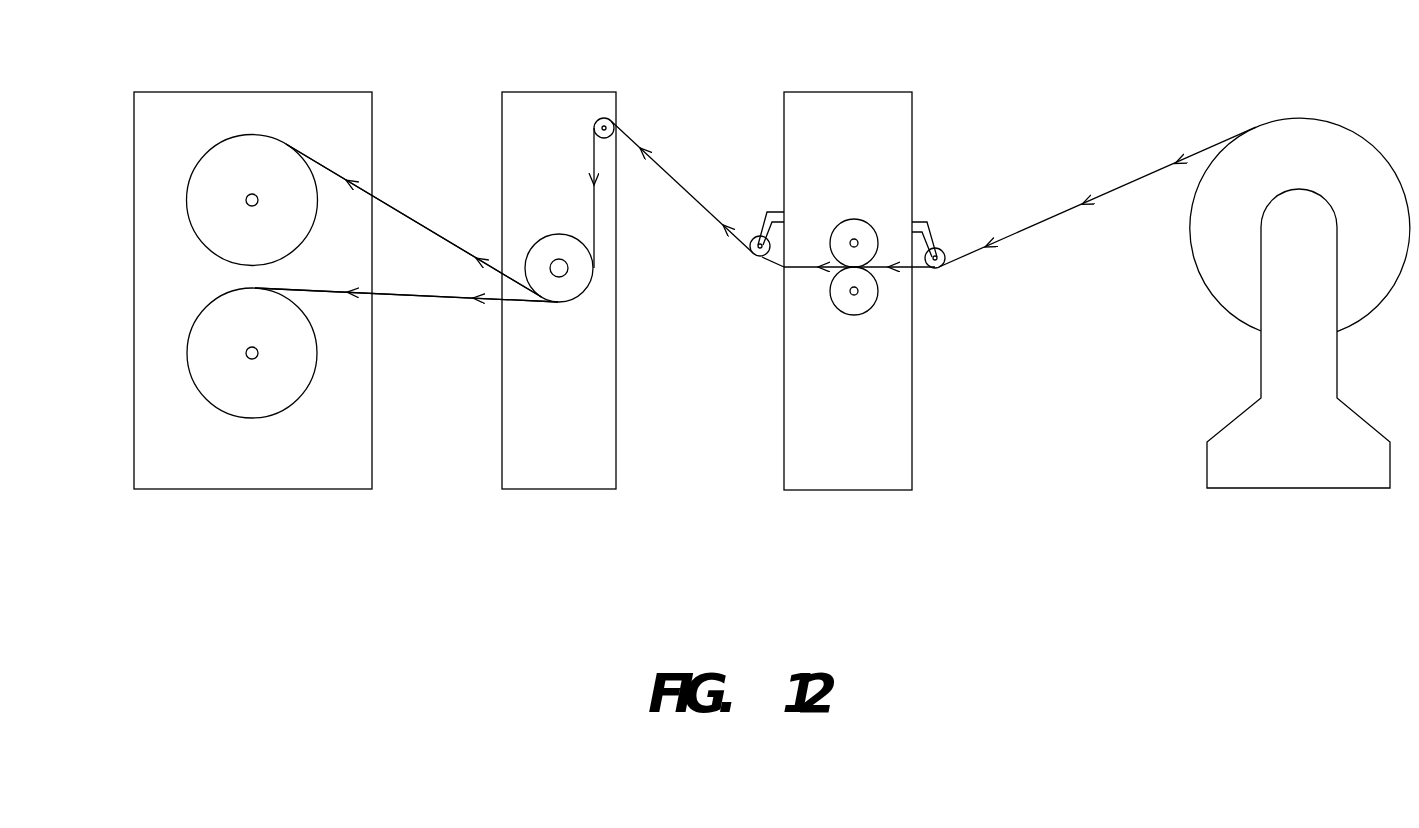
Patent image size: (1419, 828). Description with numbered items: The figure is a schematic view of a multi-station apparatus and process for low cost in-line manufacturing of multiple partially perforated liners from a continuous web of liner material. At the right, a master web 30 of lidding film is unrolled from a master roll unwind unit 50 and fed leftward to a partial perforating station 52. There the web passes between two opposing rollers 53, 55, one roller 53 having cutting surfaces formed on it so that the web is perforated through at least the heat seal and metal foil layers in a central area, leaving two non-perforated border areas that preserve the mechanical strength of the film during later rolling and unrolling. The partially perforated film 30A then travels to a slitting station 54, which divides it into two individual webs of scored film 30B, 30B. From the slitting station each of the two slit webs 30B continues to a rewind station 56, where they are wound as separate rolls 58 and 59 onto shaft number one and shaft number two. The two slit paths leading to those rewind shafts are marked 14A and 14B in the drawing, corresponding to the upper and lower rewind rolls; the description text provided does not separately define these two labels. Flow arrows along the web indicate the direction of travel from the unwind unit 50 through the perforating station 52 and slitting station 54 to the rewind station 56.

The master roll unwind unit 50 is at (1207, 442).
The master web 30 is at (1103, 193).
The partial perforating station 52 is at (862, 92).
The roller 53 is at (872, 223).
The roller 55 is at (877, 292).
The partially perforated film 30A is at (674, 190).
The slitting station 54 is at (548, 92).
The roll of scored film 30B is at (397, 208).
The rewind station 56 is at (212, 92).
The roll 58 is at (207, 150).
The roll 59 is at (200, 395).
The first slit roll 14A is at (328, 167).
The second slit roll 14B is at (310, 291).